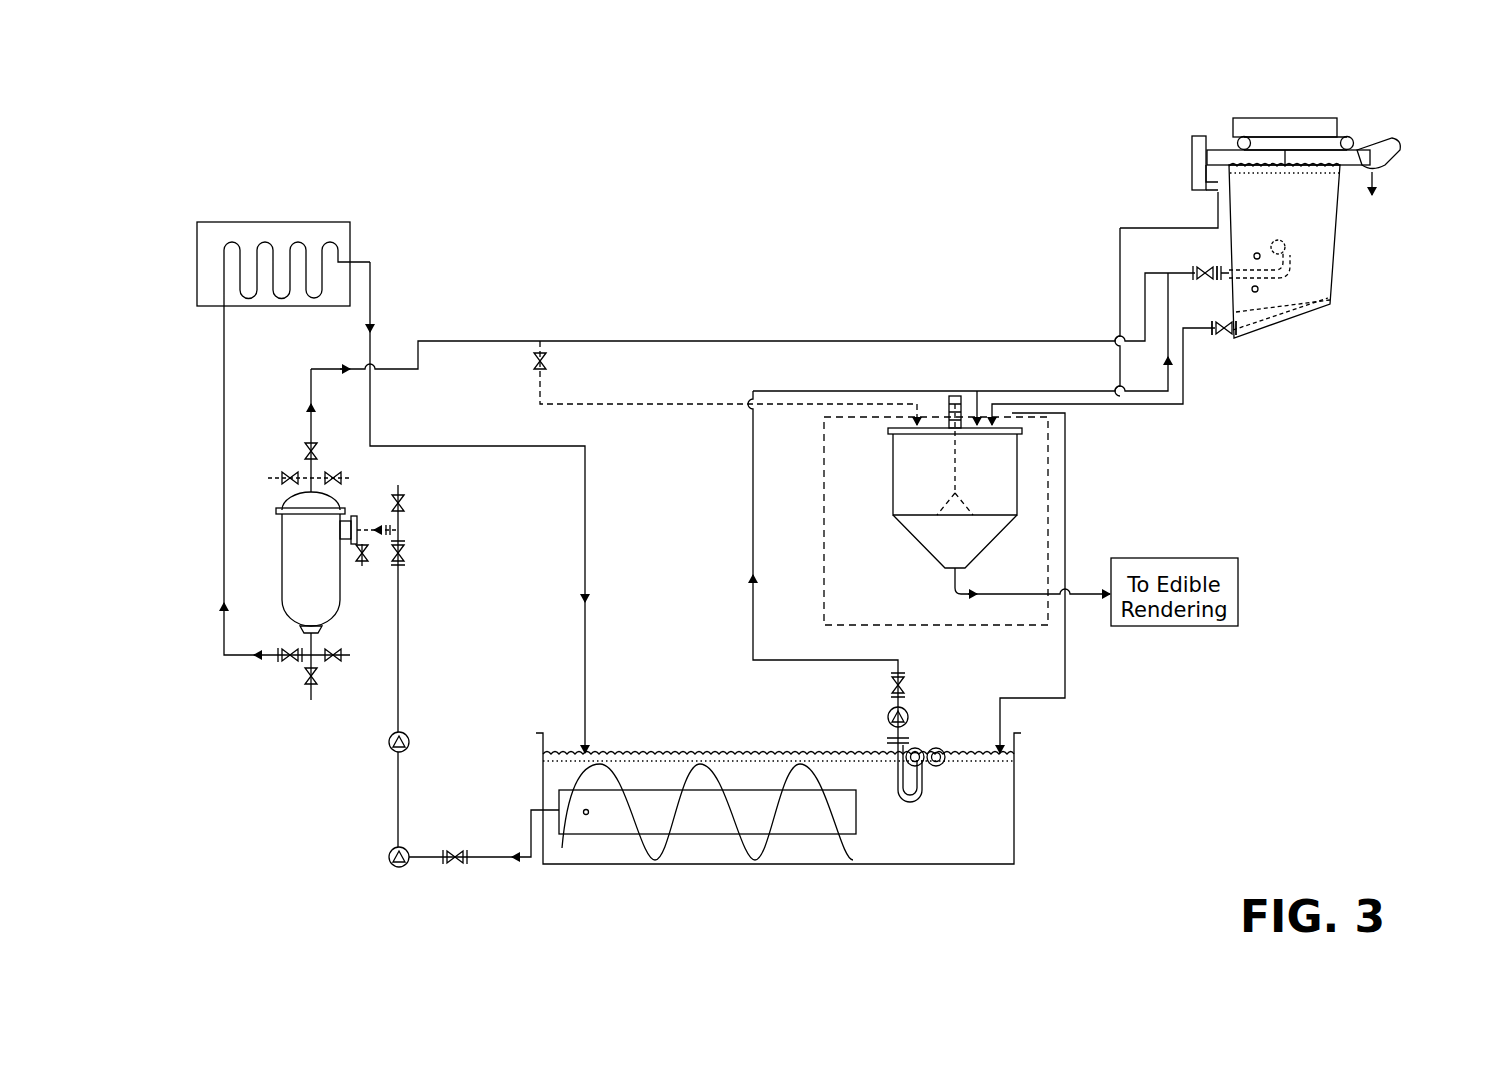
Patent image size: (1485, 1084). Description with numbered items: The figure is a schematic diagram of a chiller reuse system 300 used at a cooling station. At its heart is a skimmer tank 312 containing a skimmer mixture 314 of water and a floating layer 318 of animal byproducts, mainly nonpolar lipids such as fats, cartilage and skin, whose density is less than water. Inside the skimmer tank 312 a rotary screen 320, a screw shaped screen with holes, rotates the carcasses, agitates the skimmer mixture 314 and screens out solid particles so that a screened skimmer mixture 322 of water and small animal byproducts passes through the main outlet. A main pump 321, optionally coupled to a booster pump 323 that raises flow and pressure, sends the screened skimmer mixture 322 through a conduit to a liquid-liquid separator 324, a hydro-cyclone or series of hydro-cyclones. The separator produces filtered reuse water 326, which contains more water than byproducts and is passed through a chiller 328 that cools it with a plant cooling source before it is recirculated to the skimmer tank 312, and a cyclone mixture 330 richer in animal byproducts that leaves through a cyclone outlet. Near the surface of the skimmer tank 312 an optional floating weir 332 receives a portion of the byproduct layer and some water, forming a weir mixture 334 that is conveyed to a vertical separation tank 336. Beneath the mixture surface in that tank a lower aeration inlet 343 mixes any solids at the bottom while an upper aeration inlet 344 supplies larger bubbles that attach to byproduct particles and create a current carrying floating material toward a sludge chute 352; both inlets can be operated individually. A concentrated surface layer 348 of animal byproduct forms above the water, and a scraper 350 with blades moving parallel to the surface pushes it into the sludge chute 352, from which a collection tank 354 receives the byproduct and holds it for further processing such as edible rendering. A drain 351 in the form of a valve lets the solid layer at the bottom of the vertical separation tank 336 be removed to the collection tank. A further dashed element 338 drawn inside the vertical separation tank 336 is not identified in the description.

The chiller reuse system 300 is at (164, 178).
The skimmer tank 312 is at (1016, 848).
The skimmer mixture 314 is at (871, 828).
The layer of animal byproducts 318 is at (992, 758).
The rotary screen 320 is at (776, 822).
The main pump 321 is at (389, 857).
The screened skimmer mixture 322 is at (488, 862).
The booster pump 323 is at (389, 742).
The liquid-liquid separator 324 is at (283, 628).
The filtered reuse water 326 is at (222, 640).
The chiller 328 is at (197, 262).
The cyclone mixture 330 is at (306, 436).
The floating weir 332 is at (936, 743).
The weir mixture 334 is at (800, 657).
The vertical separation tank 336 is at (1348, 300).
The dip pipe 338 is at (1292, 268).
The lower aeration inlet 343 is at (1258, 290).
The upper aeration inlet 344 is at (1254, 256).
The surface layer 348 is at (1316, 176).
The scraper 350 is at (1312, 134).
The drain 351 is at (1240, 336).
The sludge chute 352 is at (1396, 165).
The collection tank 354 is at (892, 468).